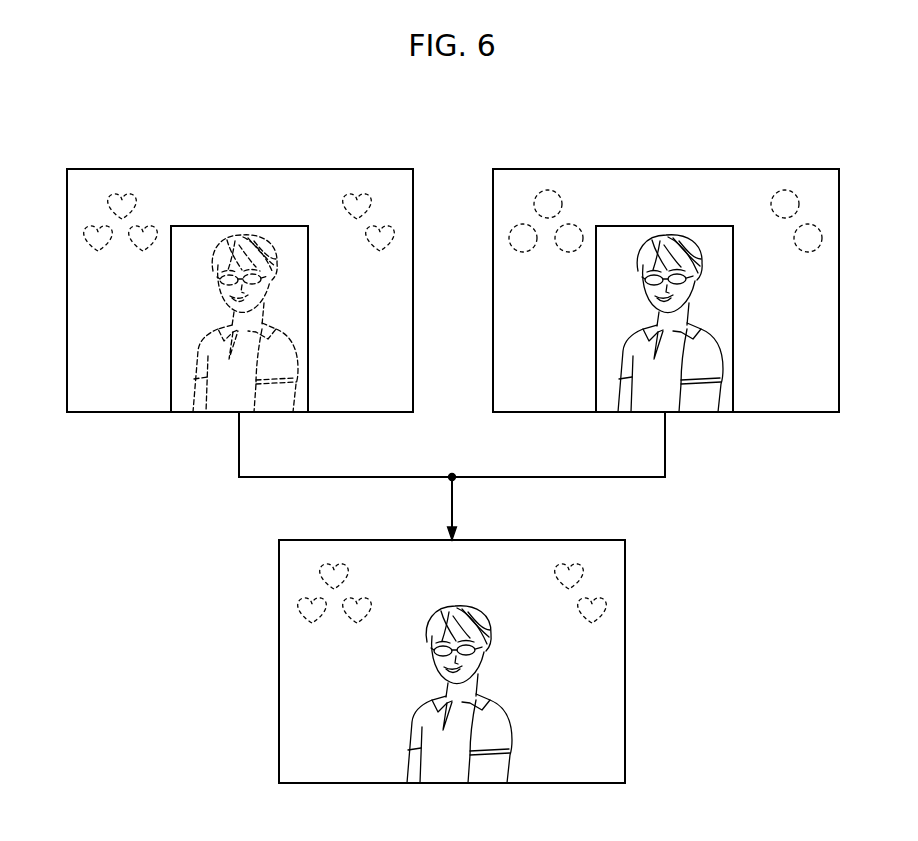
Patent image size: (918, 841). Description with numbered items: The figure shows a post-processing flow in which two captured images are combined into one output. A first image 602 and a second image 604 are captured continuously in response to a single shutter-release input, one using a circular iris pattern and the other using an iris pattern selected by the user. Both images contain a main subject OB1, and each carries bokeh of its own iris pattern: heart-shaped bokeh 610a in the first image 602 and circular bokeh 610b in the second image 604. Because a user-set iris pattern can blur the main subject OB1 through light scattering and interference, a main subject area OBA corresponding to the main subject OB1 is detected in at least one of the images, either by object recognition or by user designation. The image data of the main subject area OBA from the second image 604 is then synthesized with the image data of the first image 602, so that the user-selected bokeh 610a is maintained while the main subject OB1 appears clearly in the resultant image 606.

The first image 602 is at (376, 169).
The second image 604 is at (821, 169).
The resultant image 606 is at (528, 540).
The bokeh 610a is at (122, 194).
The bokeh 610b is at (772, 196).
The main subject OB1 is at (261, 236).
The main subject area OBA is at (310, 307).